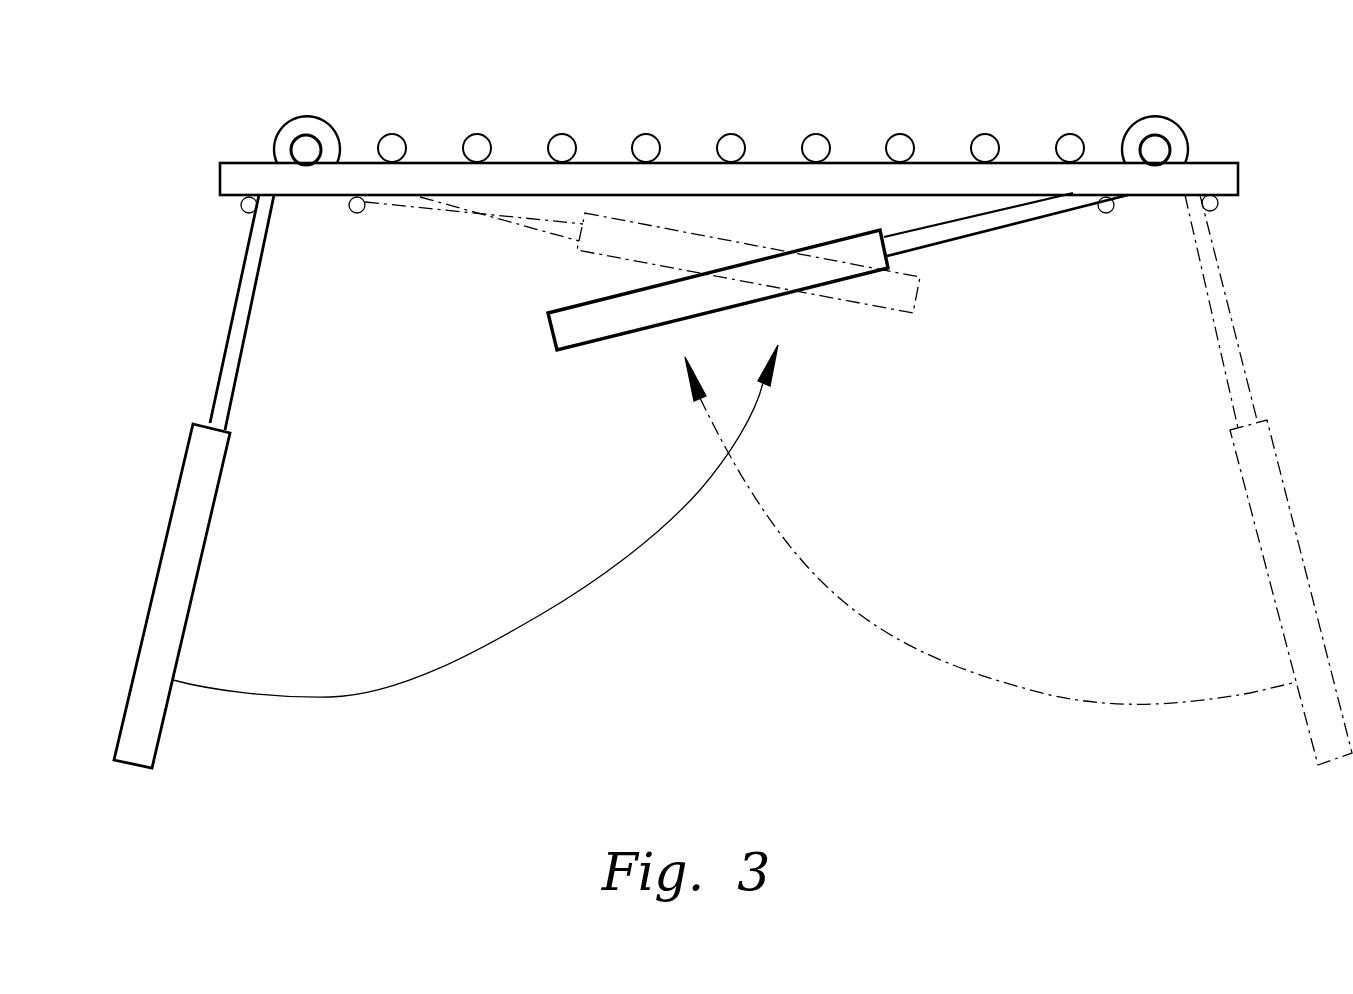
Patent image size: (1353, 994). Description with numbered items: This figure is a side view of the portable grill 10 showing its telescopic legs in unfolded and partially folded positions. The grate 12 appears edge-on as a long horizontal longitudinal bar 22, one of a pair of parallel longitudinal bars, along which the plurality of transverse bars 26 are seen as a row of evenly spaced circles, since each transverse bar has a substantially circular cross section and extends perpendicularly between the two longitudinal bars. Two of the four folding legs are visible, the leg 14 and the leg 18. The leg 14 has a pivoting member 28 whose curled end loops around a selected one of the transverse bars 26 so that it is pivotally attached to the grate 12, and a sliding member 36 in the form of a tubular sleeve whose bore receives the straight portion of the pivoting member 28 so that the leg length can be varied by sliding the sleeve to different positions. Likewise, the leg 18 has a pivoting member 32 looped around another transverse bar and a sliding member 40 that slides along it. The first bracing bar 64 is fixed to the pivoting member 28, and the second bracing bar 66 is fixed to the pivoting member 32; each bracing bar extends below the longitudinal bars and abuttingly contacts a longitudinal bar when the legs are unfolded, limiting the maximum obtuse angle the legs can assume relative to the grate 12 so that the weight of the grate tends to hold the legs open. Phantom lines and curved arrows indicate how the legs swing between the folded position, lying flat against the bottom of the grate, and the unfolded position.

The portable grill 10 is at (712, 125).
The longitudinal bar 22 is at (513, 178).
The transverse bars 26 is at (898, 143).
The first bracing bar 64 is at (1216, 206).
The second bracing bar 66 is at (247, 207).
The leg 18 is at (517, 481).
The leg 14 is at (950, 479).
The grate 12 is at (553, 217).
The pivoting member 32 is at (230, 374).
The sliding member 40 is at (200, 515).
The sliding member 36 is at (618, 323).
The pivoting member 28 is at (1012, 217).